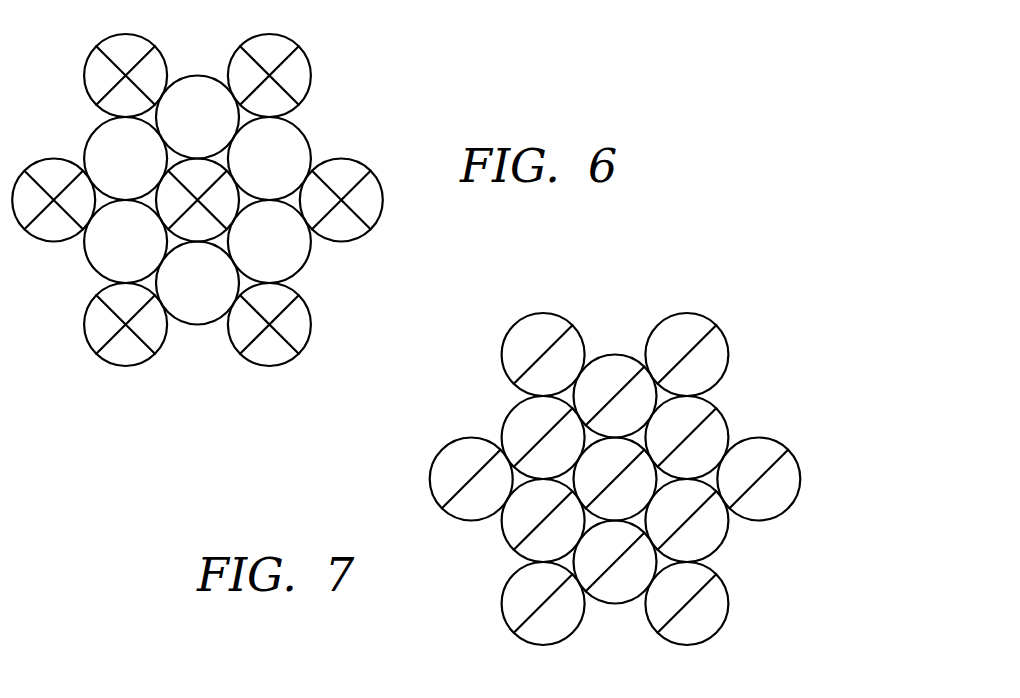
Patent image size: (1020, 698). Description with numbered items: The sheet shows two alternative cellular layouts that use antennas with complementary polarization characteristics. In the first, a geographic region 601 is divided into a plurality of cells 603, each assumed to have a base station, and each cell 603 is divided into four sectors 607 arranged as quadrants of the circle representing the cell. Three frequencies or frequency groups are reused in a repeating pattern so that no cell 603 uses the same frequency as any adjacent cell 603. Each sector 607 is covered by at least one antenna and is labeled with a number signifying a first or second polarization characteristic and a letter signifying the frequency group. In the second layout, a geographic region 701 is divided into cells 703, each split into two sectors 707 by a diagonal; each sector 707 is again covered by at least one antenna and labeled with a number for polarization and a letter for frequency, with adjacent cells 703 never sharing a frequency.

In FIG. 6, the geographic region 601 is at (358, 110).
In FIG. 6, the cell 603 is at (95, 128).
In FIG. 6, the sector 607 is at (308, 72).
In FIG. 7, the geographic region 701 is at (758, 350).
In FIG. 7, the cell 703 is at (513, 410).
In FIG. 7, the sector 707 is at (790, 478).